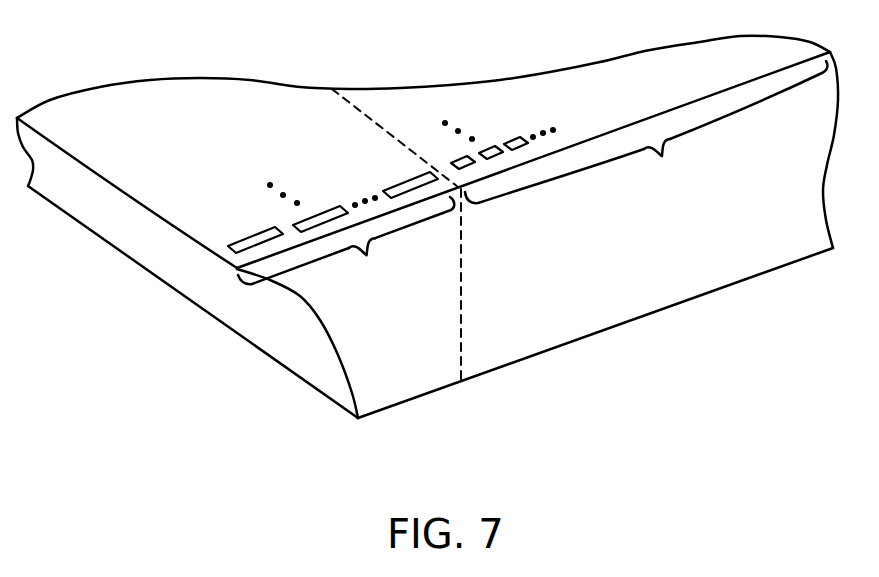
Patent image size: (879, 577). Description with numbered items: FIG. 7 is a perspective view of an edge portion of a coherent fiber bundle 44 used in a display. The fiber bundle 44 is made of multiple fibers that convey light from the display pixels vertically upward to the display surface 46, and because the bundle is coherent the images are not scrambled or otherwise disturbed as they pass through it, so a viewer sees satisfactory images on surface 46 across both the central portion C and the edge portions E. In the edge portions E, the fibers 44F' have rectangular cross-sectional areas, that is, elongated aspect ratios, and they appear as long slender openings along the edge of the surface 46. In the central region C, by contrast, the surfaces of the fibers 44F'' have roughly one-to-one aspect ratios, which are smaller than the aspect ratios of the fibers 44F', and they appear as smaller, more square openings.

The coherent fiber bundle 44 is at (595, 315).
The display surface 46 is at (213, 98).
The fibers 44F' is at (251, 242).
The fibers 44F'' is at (469, 99).
The edge portion E is at (346, 242).
The central portion C is at (646, 132).